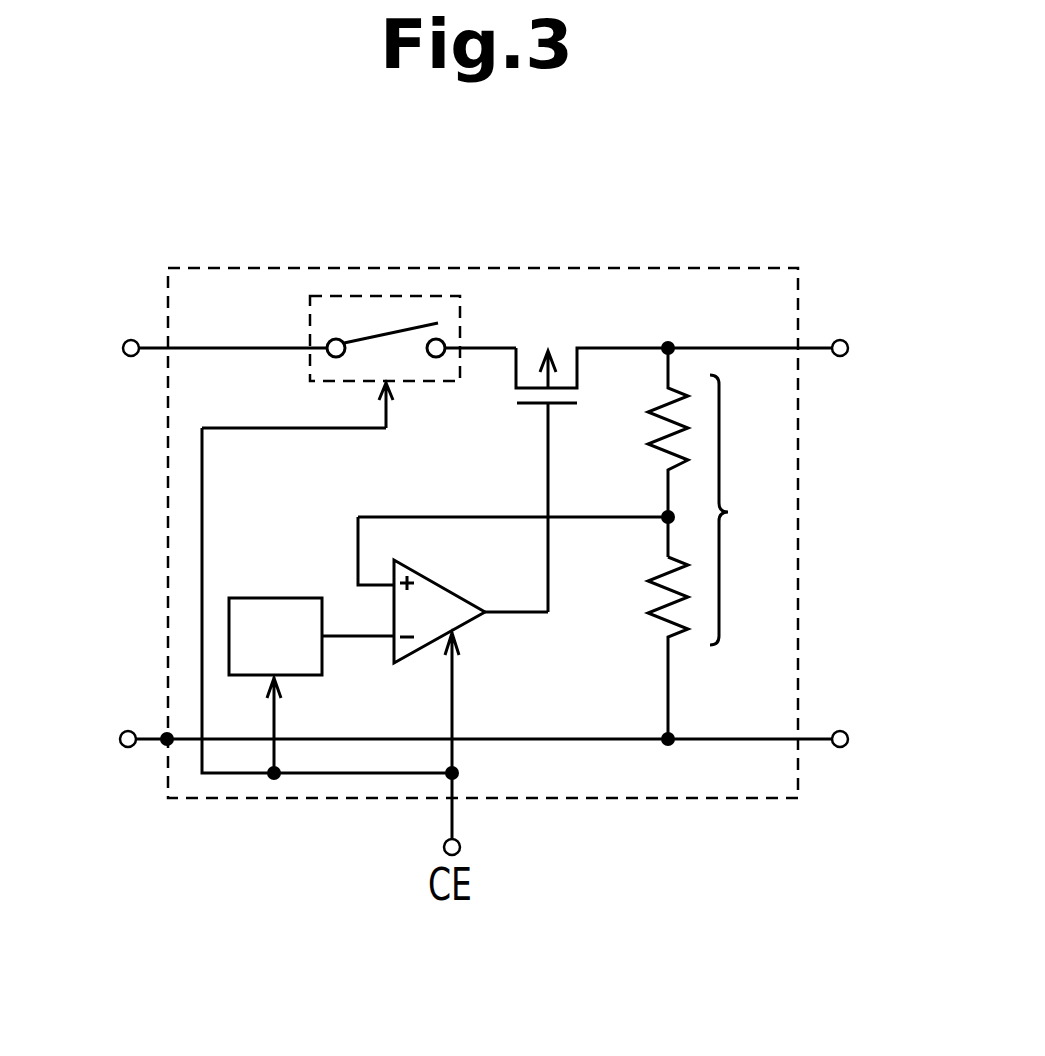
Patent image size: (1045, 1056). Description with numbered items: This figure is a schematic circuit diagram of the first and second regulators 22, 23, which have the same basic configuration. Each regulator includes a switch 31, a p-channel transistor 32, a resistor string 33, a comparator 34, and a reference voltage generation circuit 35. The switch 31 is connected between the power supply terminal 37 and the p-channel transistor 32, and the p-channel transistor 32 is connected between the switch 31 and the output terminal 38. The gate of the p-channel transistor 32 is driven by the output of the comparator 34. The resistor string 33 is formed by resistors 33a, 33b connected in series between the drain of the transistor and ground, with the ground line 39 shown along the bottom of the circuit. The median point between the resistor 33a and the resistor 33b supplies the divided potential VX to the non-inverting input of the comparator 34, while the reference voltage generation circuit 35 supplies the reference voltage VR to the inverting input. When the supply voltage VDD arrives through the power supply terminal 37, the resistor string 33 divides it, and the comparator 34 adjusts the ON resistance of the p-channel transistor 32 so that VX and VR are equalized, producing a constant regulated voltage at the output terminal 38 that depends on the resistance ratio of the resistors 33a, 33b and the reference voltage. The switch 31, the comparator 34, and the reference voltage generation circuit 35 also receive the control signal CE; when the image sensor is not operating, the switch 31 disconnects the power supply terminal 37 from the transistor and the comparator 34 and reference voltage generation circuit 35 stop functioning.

The first regulator 22 is at (483, 487).
The second regulator 23 is at (620, 268).
The switch 31 is at (387, 296).
The p-channel transistor 32 is at (516, 367).
The resistor string 33 is at (666, 540).
The resistor 33a is at (660, 425).
The resistor 33b is at (655, 612).
The comparator 34 is at (445, 583).
The reference voltage generation circuit 35 is at (278, 598).
The power supply terminal 37 is at (131, 340).
The output terminal 38 is at (843, 340).
The ground line 39 is at (580, 740).